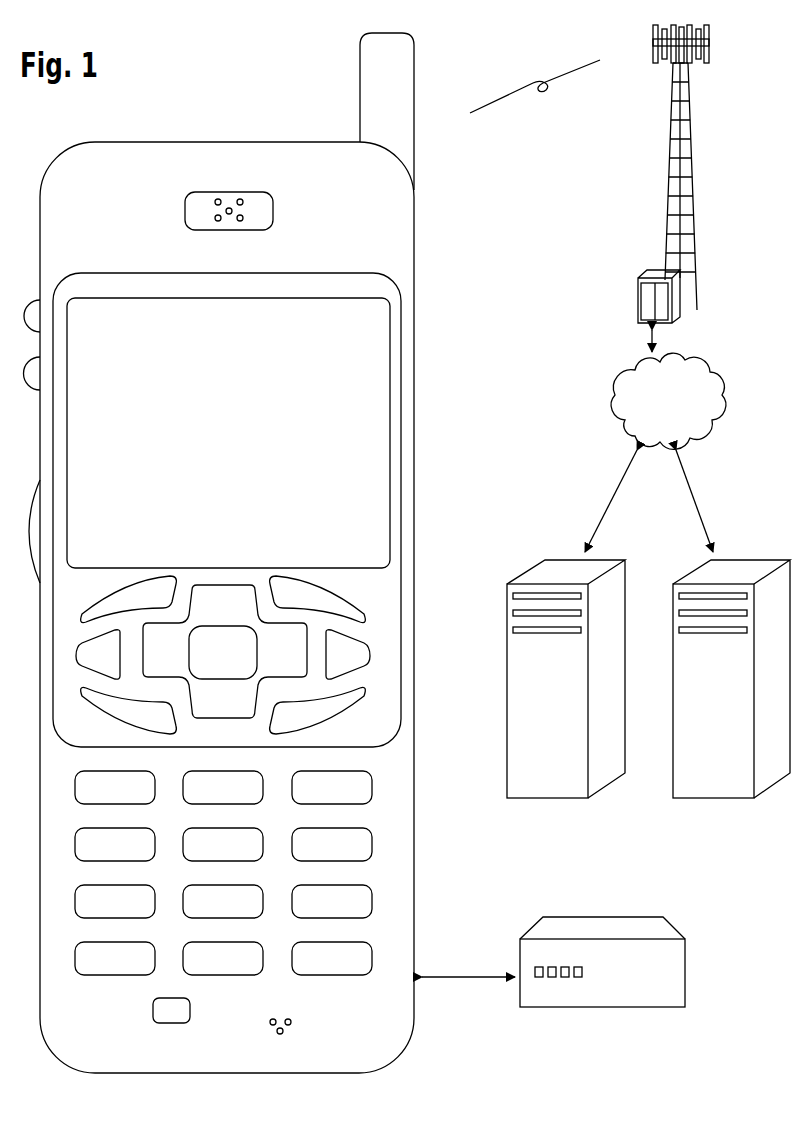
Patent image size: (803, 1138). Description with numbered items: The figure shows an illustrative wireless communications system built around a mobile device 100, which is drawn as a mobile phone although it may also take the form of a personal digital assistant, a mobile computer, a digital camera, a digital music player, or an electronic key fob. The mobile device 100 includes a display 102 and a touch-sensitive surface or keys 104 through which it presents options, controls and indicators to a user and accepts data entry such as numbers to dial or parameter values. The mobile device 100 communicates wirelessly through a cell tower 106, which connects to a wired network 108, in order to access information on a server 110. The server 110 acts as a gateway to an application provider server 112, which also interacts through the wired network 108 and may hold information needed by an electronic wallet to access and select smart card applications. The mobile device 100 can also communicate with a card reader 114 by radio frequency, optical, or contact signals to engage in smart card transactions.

The mobile device 100 is at (86, 1074).
The display 102 is at (396, 312).
The keys 104 is at (427, 963).
The cell tower 106 is at (667, 190).
The wired network 108 is at (620, 418).
The server 110 is at (513, 798).
The application provider server 112 is at (677, 798).
The card reader 114 is at (540, 1008).